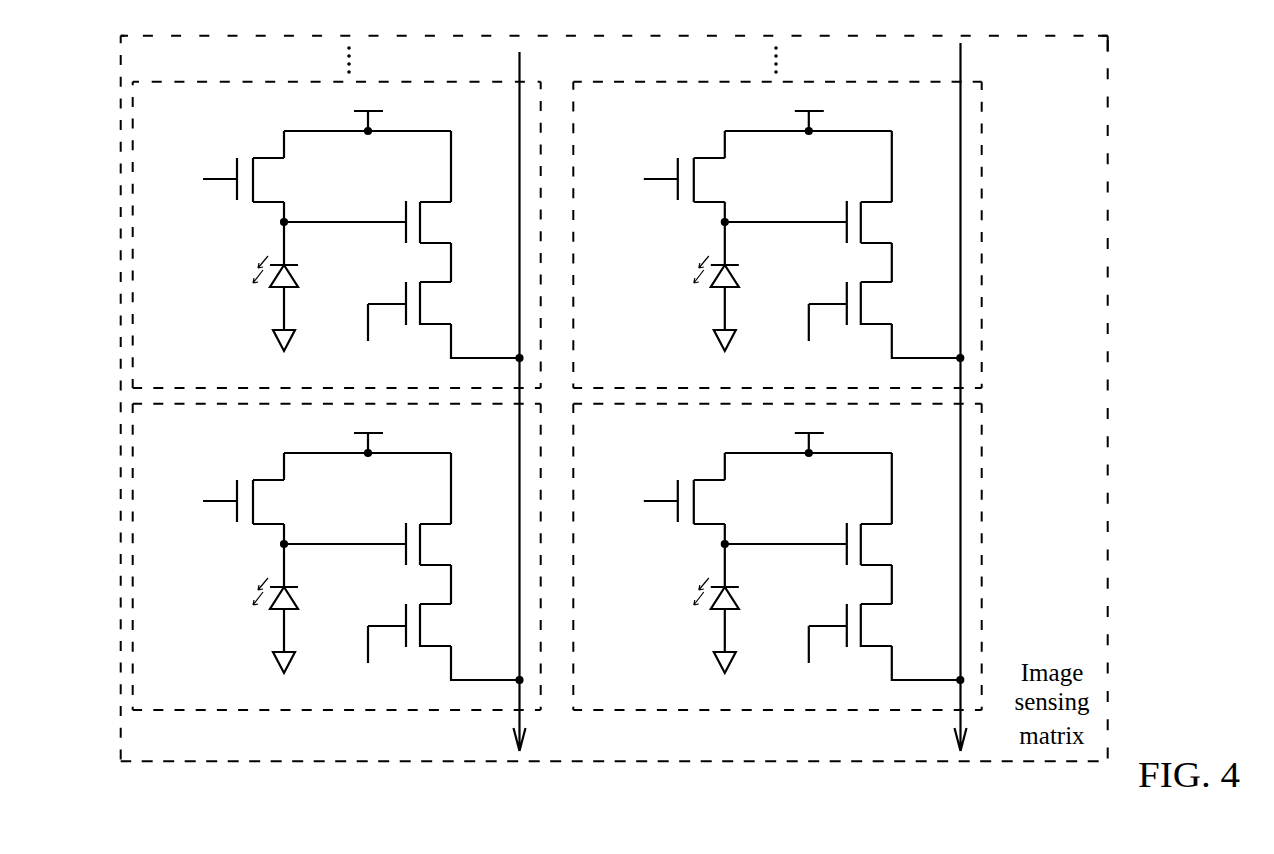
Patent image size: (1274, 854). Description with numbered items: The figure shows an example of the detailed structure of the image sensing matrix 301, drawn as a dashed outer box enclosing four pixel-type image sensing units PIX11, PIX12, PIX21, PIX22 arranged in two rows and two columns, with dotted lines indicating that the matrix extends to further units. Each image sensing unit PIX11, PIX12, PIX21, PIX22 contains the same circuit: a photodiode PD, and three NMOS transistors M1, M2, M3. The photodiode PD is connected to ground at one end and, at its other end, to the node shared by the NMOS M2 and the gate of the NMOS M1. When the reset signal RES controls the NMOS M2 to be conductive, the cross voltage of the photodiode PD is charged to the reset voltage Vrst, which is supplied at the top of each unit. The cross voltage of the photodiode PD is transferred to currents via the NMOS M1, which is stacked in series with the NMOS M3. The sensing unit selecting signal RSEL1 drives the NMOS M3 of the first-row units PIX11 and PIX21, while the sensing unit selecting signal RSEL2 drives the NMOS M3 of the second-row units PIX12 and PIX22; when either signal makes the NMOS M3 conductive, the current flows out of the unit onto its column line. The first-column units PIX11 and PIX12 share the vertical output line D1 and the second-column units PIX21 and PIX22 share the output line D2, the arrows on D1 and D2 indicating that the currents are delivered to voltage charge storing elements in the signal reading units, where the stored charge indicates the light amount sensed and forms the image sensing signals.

The image sensing matrix 301 is at (1108, 388).
The image sensing unit PIX12 is at (243, 135).
The image sensing unit PIX22 is at (777, 235).
The image sensing unit PIX11 is at (337, 557).
The image sensing unit PIX21 is at (777, 557).
The column output line D1 is at (503, 401).
The column output line D2 is at (944, 397).
The NMOS M1 is at (444, 544).
The NMOS M2 is at (276, 502).
The NMOS M3 is at (425, 625).
The photodiode PD is at (296, 625).
The reset signal RES is at (192, 501).
The reset voltage Vrst is at (367, 432).
The sensing unit selecting signal RSEL1 is at (376, 663).
The sensing unit selecting signal RSEL2 is at (376, 341).